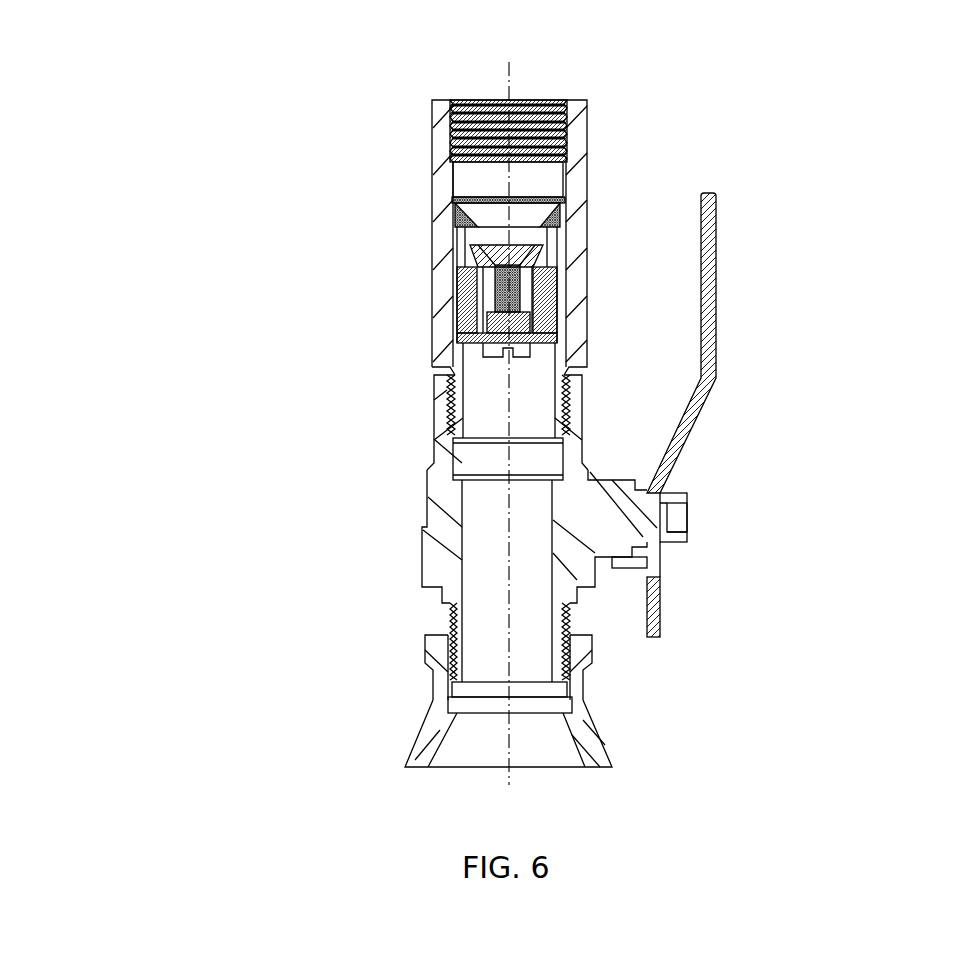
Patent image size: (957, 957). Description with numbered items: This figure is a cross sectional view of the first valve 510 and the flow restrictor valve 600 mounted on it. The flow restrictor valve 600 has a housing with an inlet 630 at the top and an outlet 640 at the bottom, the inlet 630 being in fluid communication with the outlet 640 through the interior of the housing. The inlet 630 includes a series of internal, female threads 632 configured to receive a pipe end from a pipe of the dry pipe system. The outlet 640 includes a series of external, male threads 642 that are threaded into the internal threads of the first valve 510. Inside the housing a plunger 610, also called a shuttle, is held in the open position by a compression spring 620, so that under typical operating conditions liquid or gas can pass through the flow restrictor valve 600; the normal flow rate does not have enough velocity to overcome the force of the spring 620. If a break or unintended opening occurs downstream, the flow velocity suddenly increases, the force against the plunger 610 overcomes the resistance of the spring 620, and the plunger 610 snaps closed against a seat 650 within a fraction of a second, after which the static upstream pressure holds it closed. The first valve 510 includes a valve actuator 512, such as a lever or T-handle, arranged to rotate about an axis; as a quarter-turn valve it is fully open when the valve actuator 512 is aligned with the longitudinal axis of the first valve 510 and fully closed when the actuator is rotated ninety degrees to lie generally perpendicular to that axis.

The flow restrictor valve 600 is at (358, 198).
The inlet 630 is at (417, 90).
The internal threads 632 is at (522, 120).
The seat 650 is at (442, 259).
The plunger 610 is at (546, 253).
The compression spring 620 is at (490, 293).
The external threads 642 is at (437, 402).
The outlet 640 is at (549, 453).
The first valve 510 is at (358, 493).
The valve actuator 512 is at (773, 340).